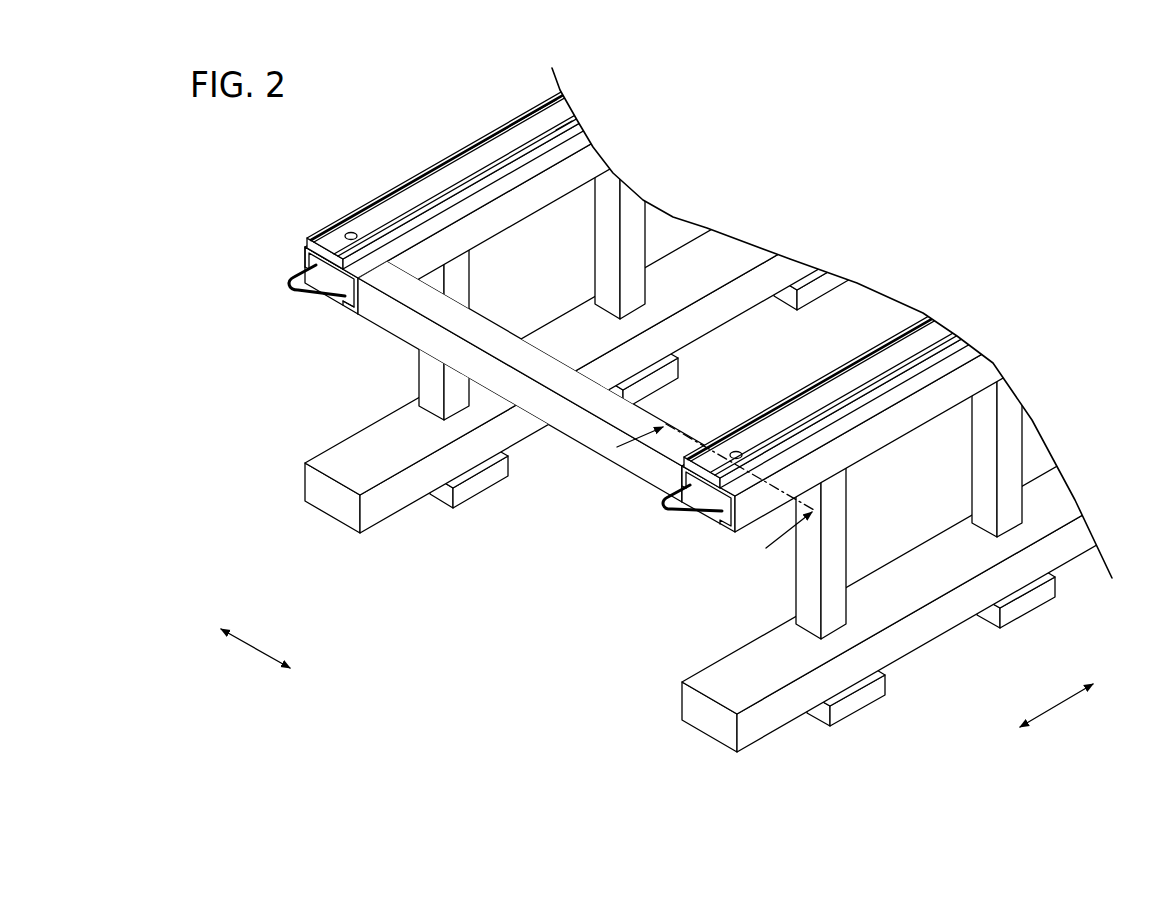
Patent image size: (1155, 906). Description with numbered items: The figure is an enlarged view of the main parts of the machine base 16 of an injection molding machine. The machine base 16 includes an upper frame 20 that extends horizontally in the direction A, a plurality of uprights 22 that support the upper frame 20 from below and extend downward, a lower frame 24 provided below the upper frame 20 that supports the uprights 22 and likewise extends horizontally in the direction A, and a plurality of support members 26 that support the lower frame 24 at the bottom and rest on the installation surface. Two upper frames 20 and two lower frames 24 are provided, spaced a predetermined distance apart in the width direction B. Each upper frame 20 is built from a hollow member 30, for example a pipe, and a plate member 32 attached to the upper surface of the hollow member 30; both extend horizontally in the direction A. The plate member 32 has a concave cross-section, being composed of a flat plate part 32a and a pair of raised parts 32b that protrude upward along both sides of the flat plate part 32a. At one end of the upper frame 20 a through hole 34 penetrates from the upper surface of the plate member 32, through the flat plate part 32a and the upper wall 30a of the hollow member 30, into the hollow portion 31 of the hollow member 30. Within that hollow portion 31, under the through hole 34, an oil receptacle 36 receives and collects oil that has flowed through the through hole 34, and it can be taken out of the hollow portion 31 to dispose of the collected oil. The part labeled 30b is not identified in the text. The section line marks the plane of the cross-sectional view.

The machine base 16 is at (217, 164).
The upper frame 20 is at (696, 290).
The uprights 22 is at (455, 292).
The lower frame 24 is at (338, 449).
The support members 26 is at (480, 491).
The hollow member 30 is at (467, 208).
The upper wall 30a is at (346, 274).
The lip 30b is at (356, 306).
The hollow portion 31 is at (303, 253).
The plate member 32 is at (389, 205).
The flat plate part 32a is at (532, 134).
The raised parts 32b is at (558, 95).
The through hole 34 is at (349, 231).
The oil receptacle 36 is at (296, 289).